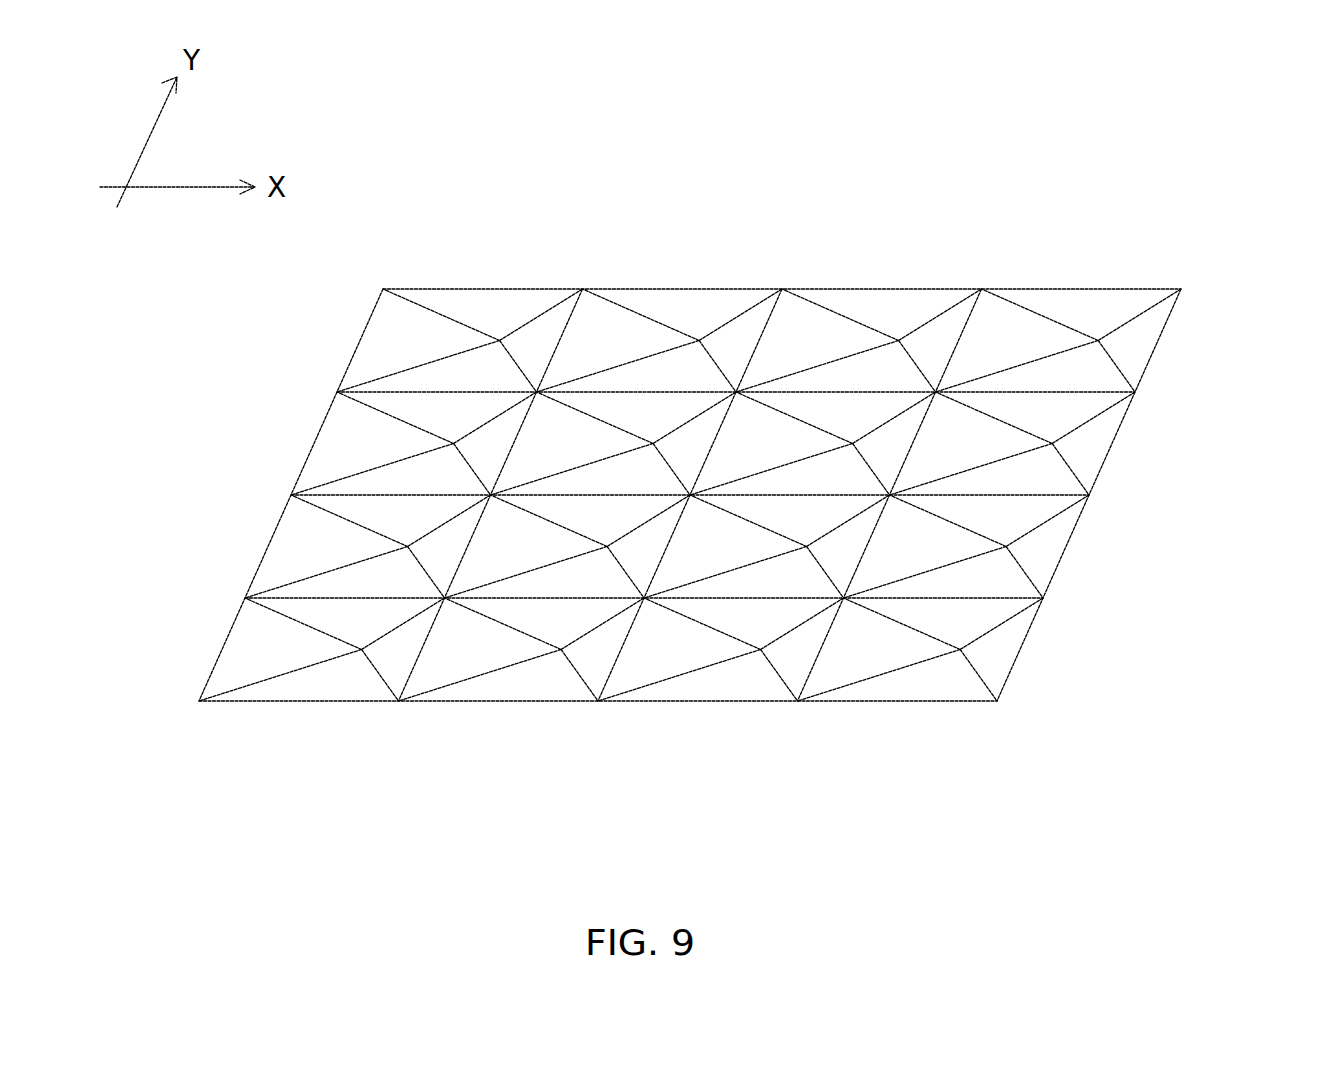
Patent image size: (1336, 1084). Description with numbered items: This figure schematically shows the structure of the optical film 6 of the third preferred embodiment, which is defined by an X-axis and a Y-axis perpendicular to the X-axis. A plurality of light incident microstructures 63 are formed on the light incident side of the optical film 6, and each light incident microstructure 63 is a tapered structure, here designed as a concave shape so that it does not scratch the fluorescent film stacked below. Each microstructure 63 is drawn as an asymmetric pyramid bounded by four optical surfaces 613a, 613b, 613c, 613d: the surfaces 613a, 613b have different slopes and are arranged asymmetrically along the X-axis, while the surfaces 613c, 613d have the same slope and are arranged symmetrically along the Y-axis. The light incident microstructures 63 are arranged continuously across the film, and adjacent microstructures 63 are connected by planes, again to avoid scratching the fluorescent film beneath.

The optical film 6 is at (1214, 262).
The light incident microstructure 63 is at (476, 722).
The first facet 613a is at (997, 660).
The second facet 613b is at (865, 658).
The third facet 613c is at (1010, 603).
The fourth facet 613d is at (923, 688).